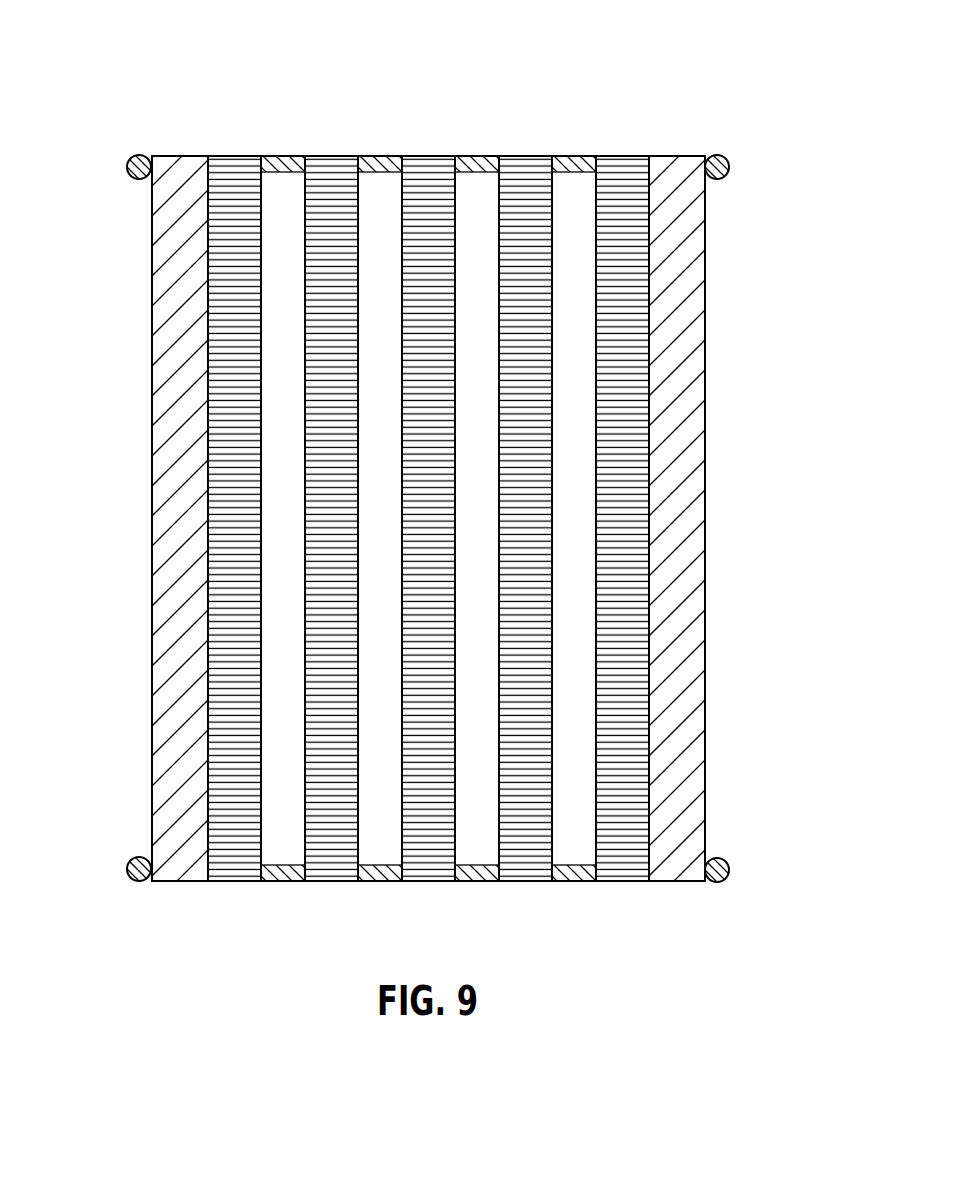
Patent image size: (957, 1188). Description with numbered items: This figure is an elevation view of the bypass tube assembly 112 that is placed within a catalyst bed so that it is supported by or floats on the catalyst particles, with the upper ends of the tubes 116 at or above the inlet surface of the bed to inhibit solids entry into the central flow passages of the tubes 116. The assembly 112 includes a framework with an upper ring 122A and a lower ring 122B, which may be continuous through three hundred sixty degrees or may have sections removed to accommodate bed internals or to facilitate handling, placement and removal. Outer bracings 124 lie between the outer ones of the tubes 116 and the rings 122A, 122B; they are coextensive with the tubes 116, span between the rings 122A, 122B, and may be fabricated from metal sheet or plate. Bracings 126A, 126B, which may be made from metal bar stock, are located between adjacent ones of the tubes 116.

The bypass tube assembly 112 is at (144, 113).
The tubes 116 is at (596, 205).
The upper ring 122A is at (727, 159).
The lower ring 122B is at (725, 861).
The outer bracings 124 is at (705, 416).
The bracing 126A is at (275, 156).
The bracing 126B is at (380, 882).